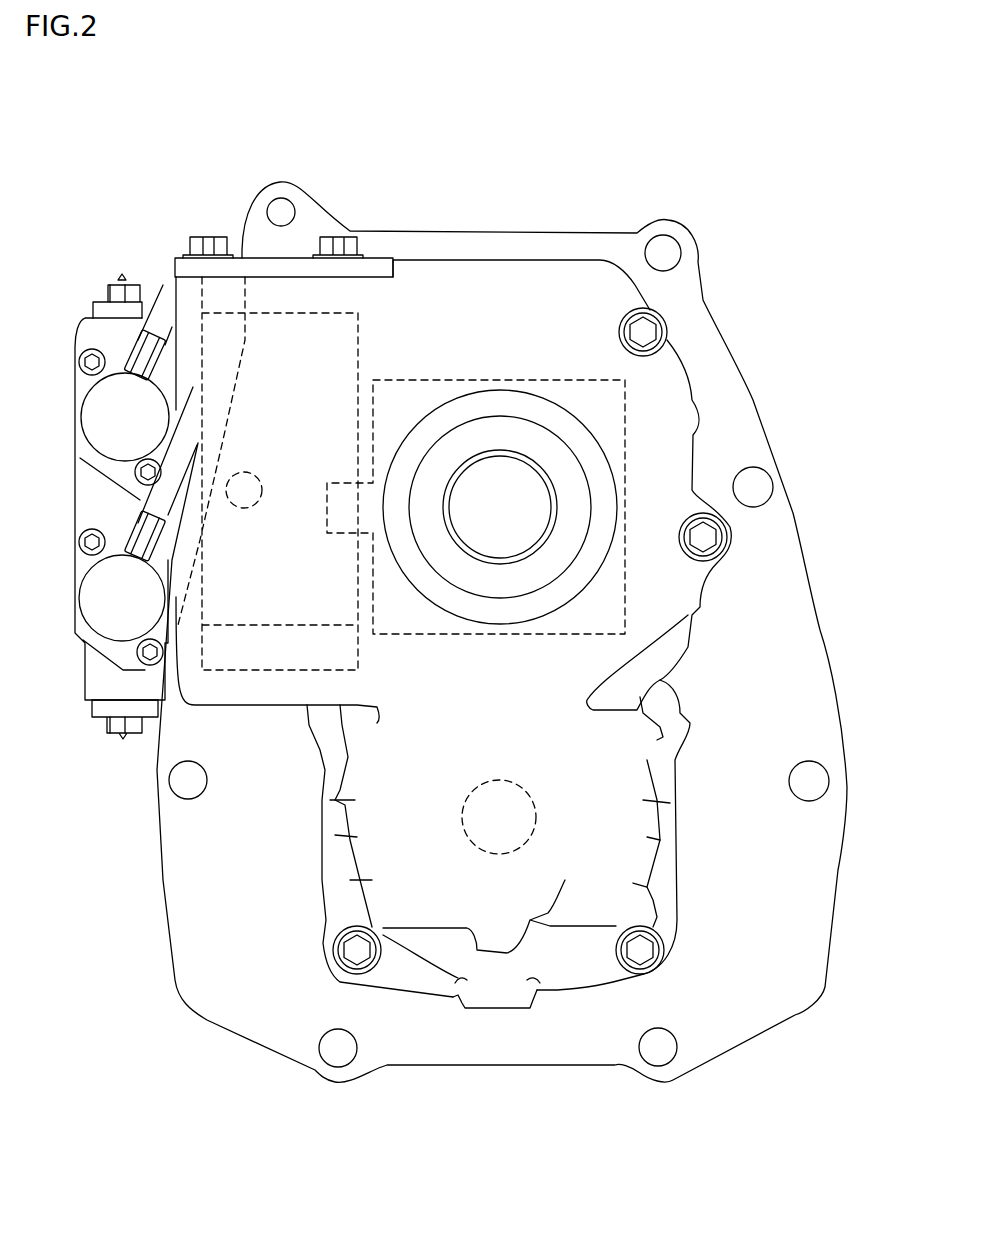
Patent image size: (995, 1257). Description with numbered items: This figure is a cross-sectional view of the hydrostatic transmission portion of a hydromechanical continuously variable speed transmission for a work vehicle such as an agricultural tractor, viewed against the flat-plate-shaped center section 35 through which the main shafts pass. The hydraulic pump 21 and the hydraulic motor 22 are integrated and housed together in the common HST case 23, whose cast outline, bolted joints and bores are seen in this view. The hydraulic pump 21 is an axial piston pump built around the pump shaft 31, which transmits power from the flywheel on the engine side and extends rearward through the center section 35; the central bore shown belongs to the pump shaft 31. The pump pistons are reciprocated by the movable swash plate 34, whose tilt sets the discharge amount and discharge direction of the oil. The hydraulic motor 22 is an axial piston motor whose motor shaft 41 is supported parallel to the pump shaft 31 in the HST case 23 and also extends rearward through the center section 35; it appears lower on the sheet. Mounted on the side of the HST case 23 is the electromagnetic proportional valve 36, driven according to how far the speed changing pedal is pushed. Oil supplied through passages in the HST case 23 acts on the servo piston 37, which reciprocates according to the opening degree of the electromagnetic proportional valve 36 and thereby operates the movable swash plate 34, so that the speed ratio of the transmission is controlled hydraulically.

The hydraulic pump 21 is at (503, 410).
The hydraulic motor 22 is at (527, 877).
The HST case 23 is at (697, 437).
The pump shaft 31 is at (517, 512).
The movable swash plate 34 is at (473, 380).
The center section 35 is at (708, 370).
The electromagnetic proportional valve 36 is at (103, 327).
The servo piston 37 is at (305, 333).
The motor shaft 41 is at (490, 840).